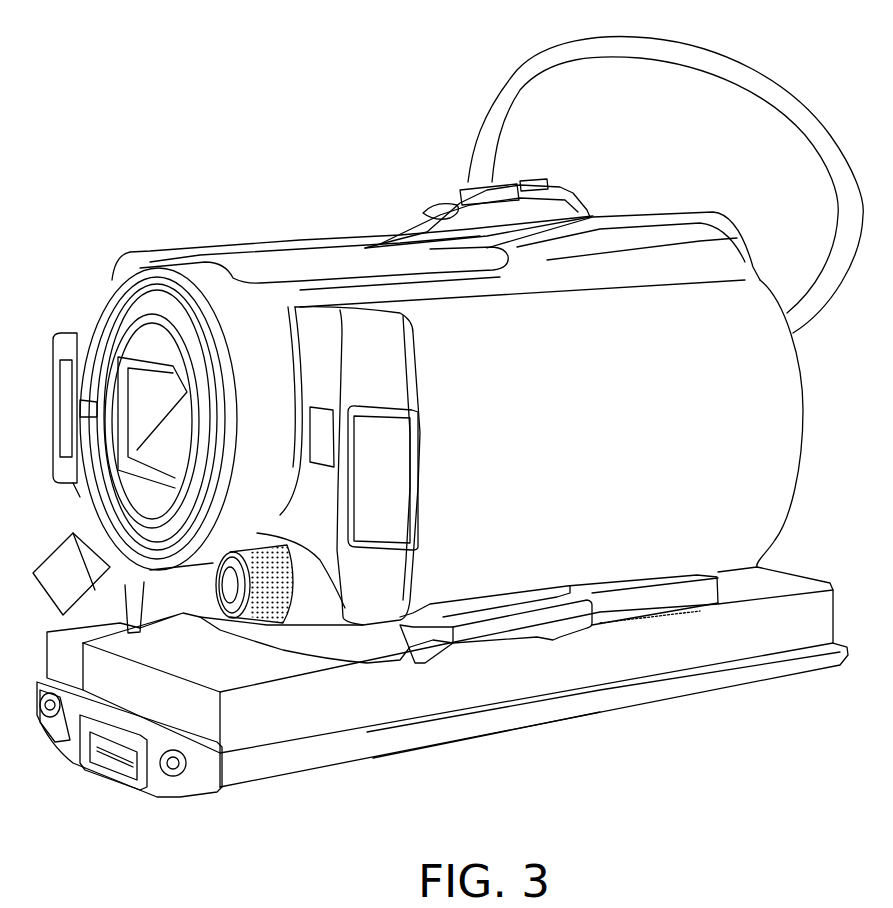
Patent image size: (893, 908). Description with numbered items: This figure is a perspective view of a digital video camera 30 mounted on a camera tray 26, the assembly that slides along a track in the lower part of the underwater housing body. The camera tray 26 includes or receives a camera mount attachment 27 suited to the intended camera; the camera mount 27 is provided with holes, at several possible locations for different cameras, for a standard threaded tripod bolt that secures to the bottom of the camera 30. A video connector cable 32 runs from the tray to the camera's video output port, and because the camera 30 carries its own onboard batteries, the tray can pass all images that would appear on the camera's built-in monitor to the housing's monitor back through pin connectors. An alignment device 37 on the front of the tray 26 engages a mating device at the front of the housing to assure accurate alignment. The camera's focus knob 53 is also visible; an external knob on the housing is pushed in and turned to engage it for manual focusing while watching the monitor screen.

The camera tray 26 is at (457, 697).
The camera mount attachment 27 is at (717, 590).
The camera 30 is at (728, 415).
The video connector cable 32 is at (750, 75).
The alignment device 37 is at (110, 760).
The camera focus knob 53 is at (273, 597).